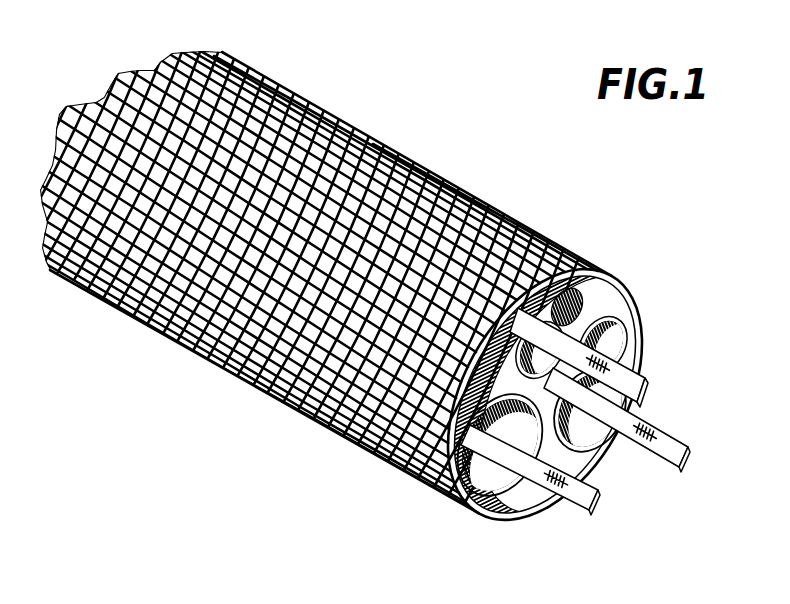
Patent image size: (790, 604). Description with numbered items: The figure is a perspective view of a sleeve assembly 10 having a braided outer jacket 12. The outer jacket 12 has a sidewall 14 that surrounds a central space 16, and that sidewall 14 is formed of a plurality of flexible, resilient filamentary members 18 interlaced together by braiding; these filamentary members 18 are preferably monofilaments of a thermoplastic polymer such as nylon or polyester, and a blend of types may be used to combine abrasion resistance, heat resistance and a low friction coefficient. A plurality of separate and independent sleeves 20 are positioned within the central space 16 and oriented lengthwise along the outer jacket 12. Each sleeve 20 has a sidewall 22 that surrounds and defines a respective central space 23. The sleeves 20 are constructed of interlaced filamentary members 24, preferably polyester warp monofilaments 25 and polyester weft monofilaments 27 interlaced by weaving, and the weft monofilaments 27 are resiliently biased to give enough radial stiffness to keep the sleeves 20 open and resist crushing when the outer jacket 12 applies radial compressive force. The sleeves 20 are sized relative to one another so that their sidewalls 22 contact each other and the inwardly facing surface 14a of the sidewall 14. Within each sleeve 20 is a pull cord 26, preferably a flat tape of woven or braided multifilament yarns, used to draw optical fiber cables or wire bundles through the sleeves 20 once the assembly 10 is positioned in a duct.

The sleeve assembly 10 is at (420, 148).
The outer jacket 12 is at (483, 203).
The sidewall 14 is at (623, 293).
The inwardly facing surface 14a is at (534, 479).
The central space 16 is at (570, 462).
The filamentary members 18 is at (160, 86).
The sleeves 20 is at (428, 458).
The sidewall 22 is at (637, 353).
The central space 23 is at (478, 483).
The interlaced filamentary members 24 is at (382, 452).
The warp monofilaments 25 is at (548, 305).
The pull cord 26 is at (670, 444).
The weft monofilaments 27 is at (572, 318).